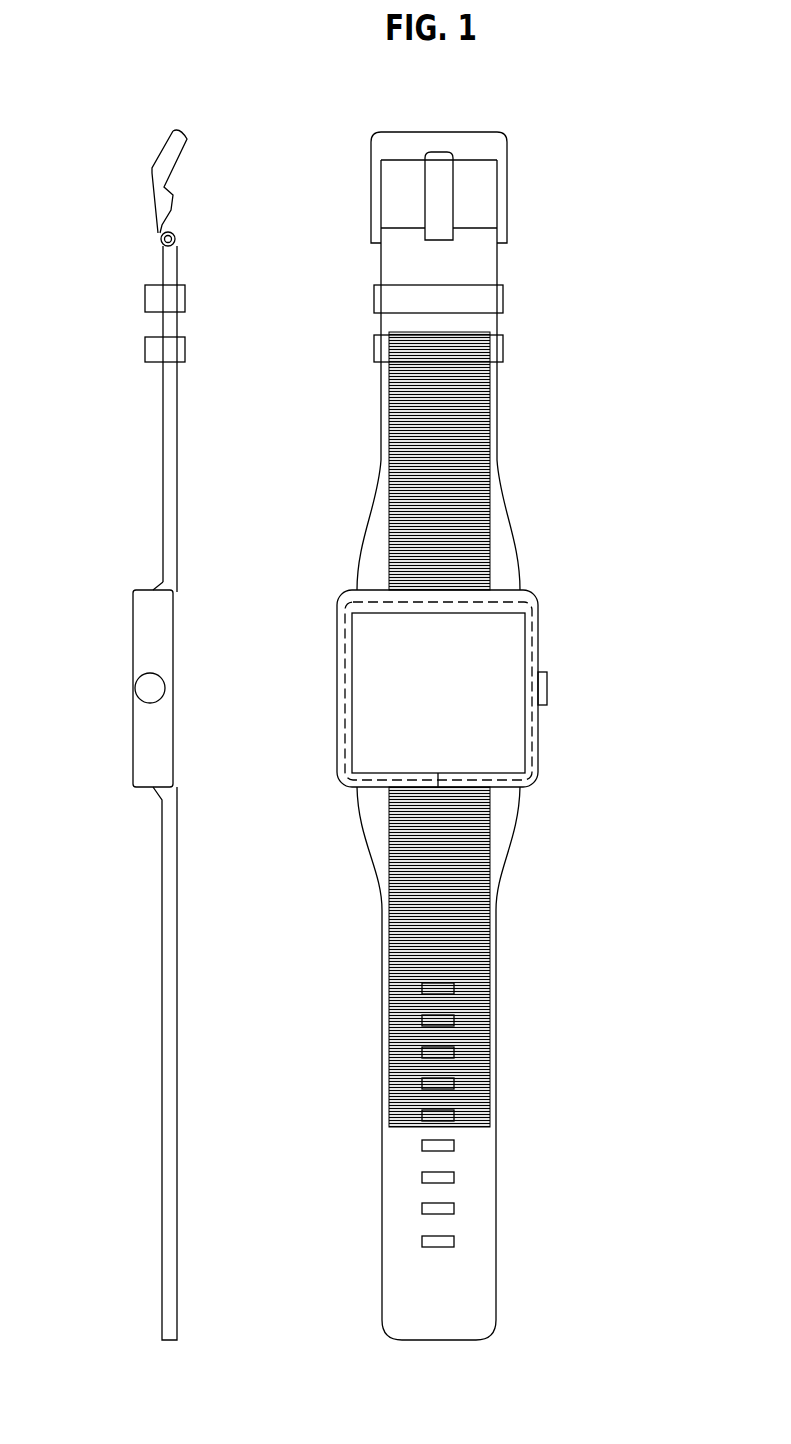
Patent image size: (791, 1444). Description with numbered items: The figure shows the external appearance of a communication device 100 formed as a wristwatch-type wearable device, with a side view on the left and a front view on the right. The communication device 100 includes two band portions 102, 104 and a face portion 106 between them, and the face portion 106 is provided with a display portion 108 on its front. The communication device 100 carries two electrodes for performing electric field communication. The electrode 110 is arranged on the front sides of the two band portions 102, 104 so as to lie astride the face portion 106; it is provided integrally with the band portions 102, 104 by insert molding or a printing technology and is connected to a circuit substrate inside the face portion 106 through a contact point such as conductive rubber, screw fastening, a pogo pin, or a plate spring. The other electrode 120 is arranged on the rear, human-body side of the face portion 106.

The communication device 100 is at (662, 1312).
The band portion 102 is at (177, 444).
The band portion 104 is at (177, 826).
The face portion 106 is at (173, 647).
The display portion 108 is at (513, 738).
The electrode 110 is at (483, 437).
The electrode 120 is at (532, 660).